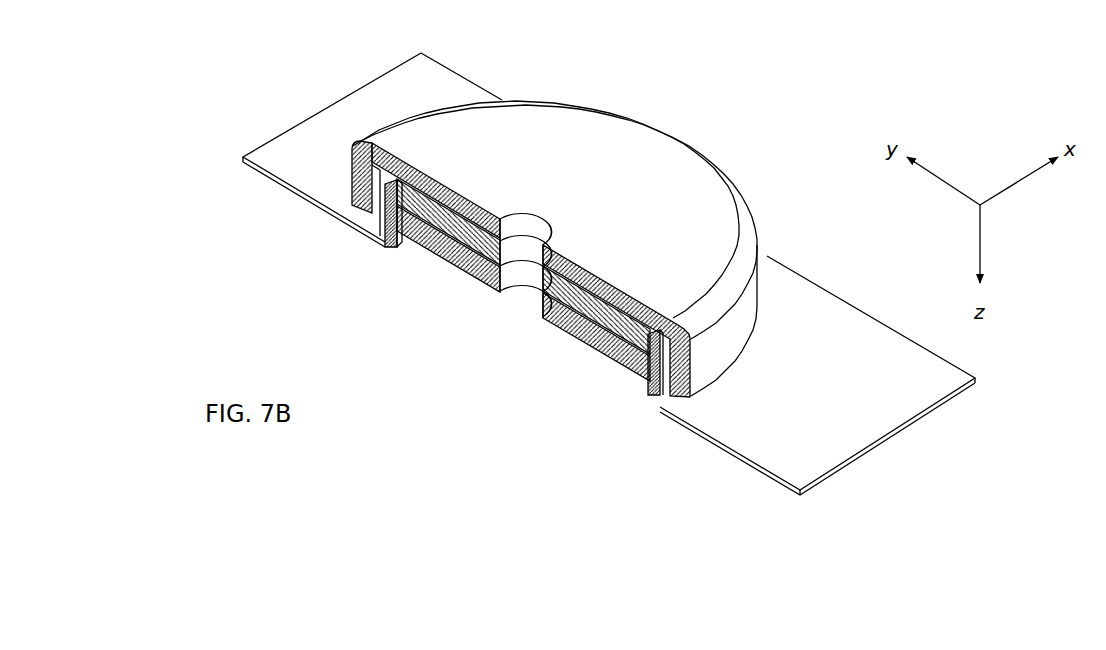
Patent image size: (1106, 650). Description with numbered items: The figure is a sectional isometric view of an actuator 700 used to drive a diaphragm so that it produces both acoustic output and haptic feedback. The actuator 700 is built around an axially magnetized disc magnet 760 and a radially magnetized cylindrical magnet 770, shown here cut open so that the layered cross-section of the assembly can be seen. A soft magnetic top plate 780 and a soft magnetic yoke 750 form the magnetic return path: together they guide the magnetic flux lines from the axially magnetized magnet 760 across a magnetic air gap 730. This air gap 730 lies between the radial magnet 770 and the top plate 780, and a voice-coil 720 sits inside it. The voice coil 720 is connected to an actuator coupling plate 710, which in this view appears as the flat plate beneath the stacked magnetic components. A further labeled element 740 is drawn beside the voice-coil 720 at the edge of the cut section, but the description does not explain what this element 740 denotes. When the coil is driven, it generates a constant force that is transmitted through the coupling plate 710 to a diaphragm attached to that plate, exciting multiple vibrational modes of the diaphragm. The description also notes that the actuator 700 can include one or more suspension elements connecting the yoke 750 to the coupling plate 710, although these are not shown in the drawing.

The actuator 700 is at (132, 160).
The actuator coupling plate 710 is at (897, 390).
The voice-coil 720 is at (401, 250).
The magnetic air gap 730 is at (374, 178).
The connecting pin 740 is at (386, 244).
The soft magnetic yoke 750 is at (650, 200).
The axially magnetized disc magnet 760 is at (669, 306).
The radially magnetized cylindrical magnet 770 is at (650, 374).
The soft magnetic top plate 780 is at (558, 330).